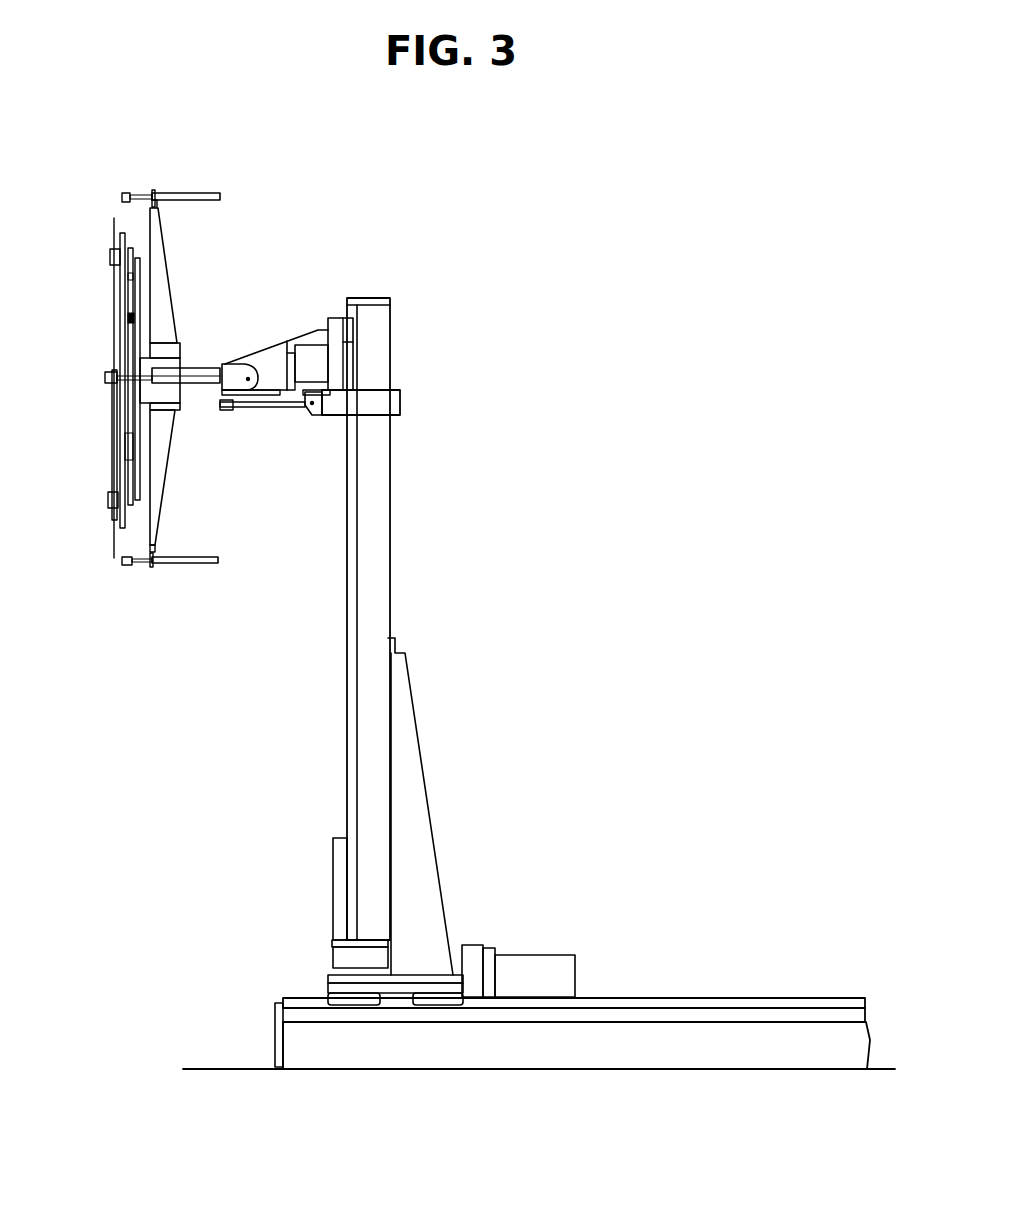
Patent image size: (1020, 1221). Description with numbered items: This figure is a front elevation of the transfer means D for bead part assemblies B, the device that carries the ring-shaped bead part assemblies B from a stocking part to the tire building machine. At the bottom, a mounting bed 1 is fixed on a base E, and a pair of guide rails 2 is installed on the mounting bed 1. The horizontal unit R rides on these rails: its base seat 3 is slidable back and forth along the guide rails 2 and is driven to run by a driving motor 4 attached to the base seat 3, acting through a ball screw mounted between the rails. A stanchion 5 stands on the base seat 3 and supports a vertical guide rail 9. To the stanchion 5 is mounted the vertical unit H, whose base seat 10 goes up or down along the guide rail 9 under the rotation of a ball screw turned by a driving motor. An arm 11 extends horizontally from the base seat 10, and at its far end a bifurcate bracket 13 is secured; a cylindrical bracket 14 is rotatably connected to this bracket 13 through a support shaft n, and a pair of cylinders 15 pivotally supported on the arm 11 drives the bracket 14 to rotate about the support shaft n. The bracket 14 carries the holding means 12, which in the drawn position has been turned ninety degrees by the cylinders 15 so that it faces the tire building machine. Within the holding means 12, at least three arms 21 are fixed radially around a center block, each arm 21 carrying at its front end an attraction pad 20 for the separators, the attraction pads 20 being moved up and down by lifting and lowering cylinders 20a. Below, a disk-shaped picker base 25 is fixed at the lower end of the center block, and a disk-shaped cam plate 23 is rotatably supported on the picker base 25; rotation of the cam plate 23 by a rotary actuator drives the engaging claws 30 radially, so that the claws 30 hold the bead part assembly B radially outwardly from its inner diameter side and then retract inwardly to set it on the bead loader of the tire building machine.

The mounting bed 1 is at (861, 1016).
The guide rails 2 is at (835, 997).
The base seat 3 is at (326, 977).
The driving motor 4 is at (538, 955).
The stanchion 5 is at (378, 518).
The vertical guide rail 9 is at (347, 715).
The base seat 10 is at (345, 317).
The arm 11 is at (300, 343).
The holding means 12 is at (88, 361).
The bifurcate bracket 13 is at (267, 375).
The cylindrical bracket 14 is at (224, 366).
The cylinders 15 is at (400, 405).
The attraction pad 20 is at (128, 190).
The lifting and lowering cylinders 20a is at (205, 192).
The arms 21 is at (157, 282).
The cam plate 23 is at (122, 340).
The picker base 25 is at (115, 437).
The engaging claws 30 is at (112, 258).
The bead part assemblies B is at (117, 228).
The transfer means D is at (426, 296).
The base E is at (217, 1068).
The vertical unit H is at (316, 317).
The horizontal unit R is at (407, 652).
The support shaft n is at (250, 390).